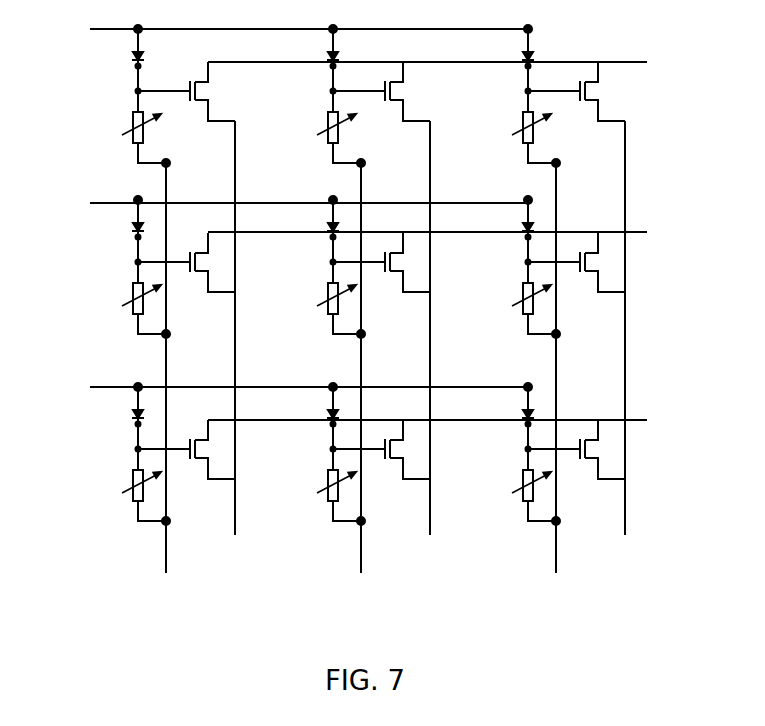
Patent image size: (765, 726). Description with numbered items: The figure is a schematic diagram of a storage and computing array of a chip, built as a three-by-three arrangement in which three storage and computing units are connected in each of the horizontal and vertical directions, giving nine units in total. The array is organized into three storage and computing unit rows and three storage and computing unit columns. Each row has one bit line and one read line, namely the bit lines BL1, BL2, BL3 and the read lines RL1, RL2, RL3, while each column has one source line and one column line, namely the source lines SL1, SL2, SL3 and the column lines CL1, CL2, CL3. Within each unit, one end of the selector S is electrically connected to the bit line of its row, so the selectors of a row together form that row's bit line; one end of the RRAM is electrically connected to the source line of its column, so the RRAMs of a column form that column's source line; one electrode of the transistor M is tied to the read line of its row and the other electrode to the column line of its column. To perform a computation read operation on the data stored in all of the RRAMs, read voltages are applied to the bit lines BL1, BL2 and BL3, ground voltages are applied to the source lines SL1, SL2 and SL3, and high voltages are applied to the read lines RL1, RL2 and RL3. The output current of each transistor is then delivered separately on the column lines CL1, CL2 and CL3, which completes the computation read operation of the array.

The first bit line BL1 is at (284, 30).
The second bit line BL2 is at (282, 204).
The third bit line BL3 is at (284, 388).
The first read line RL1 is at (457, 64).
The second read line RL2 is at (457, 233).
The third read line RL3 is at (457, 421).
The first source line SL1 is at (168, 384).
The second source line SL2 is at (363, 384).
The third source line SL3 is at (556, 384).
The first column line CL1 is at (235, 342).
The second column line CL2 is at (429, 342).
The third column line CL3 is at (625, 342).